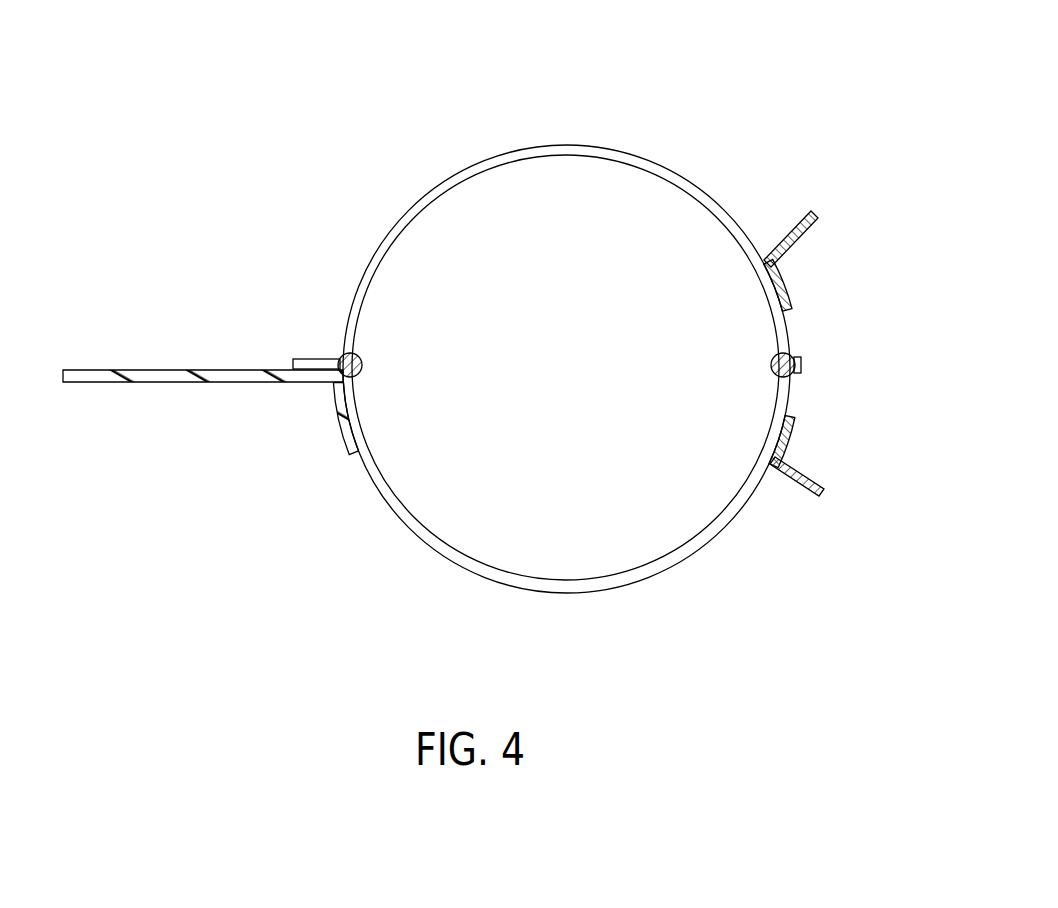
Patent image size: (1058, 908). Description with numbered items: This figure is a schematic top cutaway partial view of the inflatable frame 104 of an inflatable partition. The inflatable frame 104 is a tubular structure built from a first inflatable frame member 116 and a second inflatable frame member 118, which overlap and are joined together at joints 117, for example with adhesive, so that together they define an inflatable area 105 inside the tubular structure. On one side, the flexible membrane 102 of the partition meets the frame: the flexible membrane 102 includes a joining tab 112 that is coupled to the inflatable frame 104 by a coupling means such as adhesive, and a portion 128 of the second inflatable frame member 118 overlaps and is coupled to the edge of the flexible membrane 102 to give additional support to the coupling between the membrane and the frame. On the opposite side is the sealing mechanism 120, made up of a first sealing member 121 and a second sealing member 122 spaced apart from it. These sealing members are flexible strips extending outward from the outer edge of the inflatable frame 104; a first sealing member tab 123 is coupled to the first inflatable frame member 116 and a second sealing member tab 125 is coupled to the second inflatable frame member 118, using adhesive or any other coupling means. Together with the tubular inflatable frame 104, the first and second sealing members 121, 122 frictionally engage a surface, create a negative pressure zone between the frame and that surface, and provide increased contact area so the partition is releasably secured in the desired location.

The flexible membrane 102 is at (137, 383).
The inflatable frame 104 is at (378, 80).
The inflatable area 105 is at (478, 415).
The joining tab 112 is at (343, 428).
The first inflatable frame member 116 is at (710, 187).
The joints 117 is at (340, 355).
The second inflatable frame member 118 is at (727, 538).
The sealing mechanism 120 is at (875, 240).
The first sealing member 121 is at (812, 260).
The second sealing member 122 is at (830, 452).
The first sealing member tab 123 is at (778, 290).
The second sealing member tab 125 is at (775, 447).
The portion of the second inflatable frame member 128 is at (307, 358).